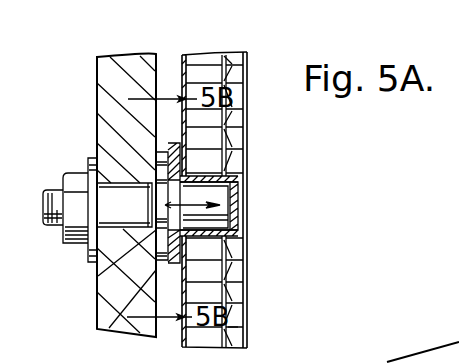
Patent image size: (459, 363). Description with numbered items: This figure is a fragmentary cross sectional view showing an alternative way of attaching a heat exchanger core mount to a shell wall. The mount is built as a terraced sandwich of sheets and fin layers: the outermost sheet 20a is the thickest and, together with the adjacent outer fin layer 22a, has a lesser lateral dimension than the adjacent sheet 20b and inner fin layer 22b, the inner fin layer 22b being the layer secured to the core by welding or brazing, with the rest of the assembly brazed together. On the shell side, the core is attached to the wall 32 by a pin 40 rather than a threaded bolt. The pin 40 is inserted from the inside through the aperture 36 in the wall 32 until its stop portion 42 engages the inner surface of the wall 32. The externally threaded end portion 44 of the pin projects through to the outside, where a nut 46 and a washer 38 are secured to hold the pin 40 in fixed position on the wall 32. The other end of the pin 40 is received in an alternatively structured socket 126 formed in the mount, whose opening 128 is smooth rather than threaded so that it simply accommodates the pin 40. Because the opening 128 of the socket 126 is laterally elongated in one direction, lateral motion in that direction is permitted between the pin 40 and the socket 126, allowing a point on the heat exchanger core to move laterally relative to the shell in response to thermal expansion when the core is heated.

The outermost sheet 20a is at (181, 57).
The adjacent sheet 20b is at (226, 72).
The outer fin layer 22a is at (202, 158).
The inner fin layer 22b is at (236, 124).
The wall 32 is at (110, 82).
The aperture 36 is at (98, 276).
The washer 38 is at (96, 160).
The pin 40 is at (128, 195).
The stop portion 42 is at (109, 328).
The externally threaded end portion 44 is at (45, 225).
The nut 46 is at (65, 245).
The socket 126 is at (232, 180).
The opening 128 is at (243, 216).